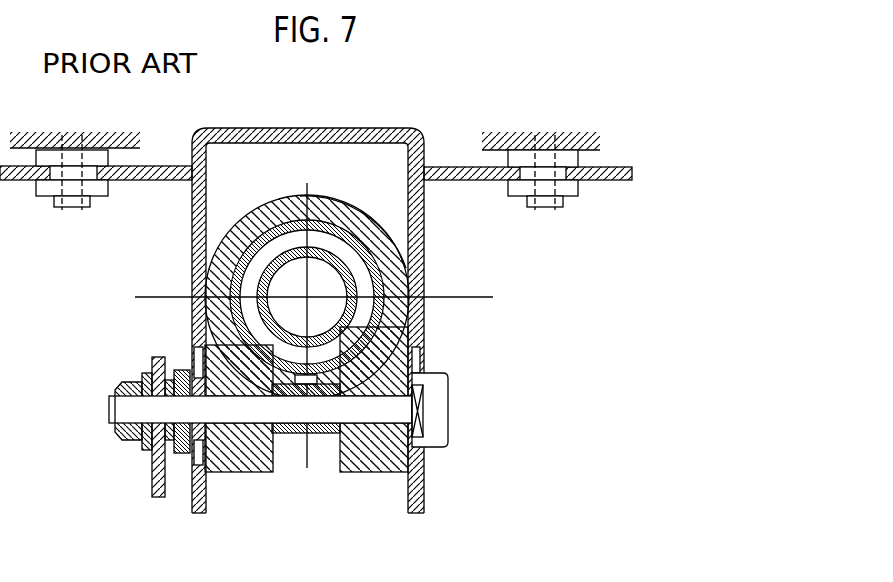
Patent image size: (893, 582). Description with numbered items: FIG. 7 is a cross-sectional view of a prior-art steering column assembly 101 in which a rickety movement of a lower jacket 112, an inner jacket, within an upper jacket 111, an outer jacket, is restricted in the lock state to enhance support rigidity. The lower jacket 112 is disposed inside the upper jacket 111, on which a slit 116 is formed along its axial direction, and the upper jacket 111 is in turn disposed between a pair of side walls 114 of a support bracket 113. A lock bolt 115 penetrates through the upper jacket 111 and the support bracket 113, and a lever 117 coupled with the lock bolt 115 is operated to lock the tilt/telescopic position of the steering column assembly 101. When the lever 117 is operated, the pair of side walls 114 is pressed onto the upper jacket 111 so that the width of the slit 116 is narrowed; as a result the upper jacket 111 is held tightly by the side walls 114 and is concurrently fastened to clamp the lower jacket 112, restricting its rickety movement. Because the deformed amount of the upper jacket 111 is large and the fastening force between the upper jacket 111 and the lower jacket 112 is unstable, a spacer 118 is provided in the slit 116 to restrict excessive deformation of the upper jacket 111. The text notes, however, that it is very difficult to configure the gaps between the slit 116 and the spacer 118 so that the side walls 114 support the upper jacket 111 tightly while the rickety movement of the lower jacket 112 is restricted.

The steering column assembly 101 is at (321, 288).
The upper jacket 111 is at (405, 273).
The lower jacket 112 is at (424, 338).
The support bracket 113 is at (430, 256).
The side walls 114 is at (414, 308).
The lock bolt 115 is at (448, 412).
The slit 116 is at (293, 453).
The lever 117 is at (152, 473).
The spacer 118 is at (323, 437).